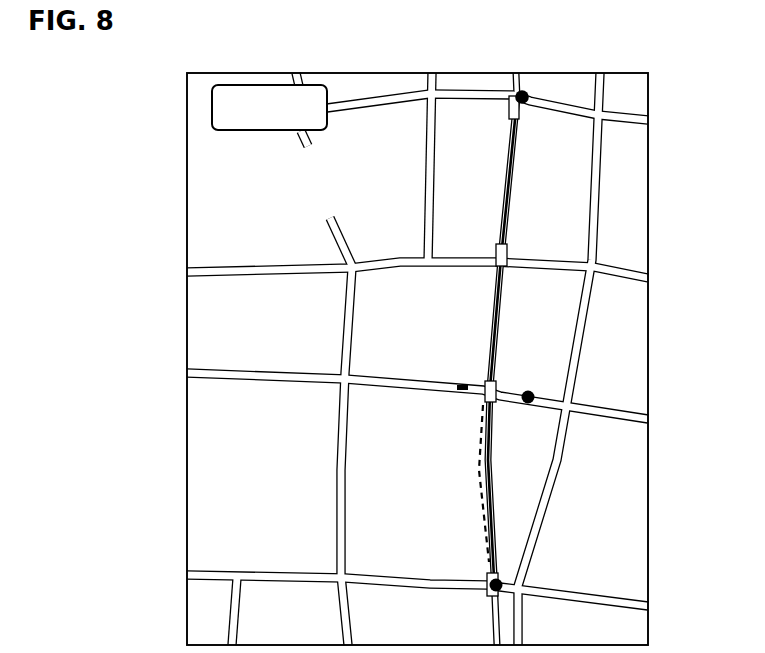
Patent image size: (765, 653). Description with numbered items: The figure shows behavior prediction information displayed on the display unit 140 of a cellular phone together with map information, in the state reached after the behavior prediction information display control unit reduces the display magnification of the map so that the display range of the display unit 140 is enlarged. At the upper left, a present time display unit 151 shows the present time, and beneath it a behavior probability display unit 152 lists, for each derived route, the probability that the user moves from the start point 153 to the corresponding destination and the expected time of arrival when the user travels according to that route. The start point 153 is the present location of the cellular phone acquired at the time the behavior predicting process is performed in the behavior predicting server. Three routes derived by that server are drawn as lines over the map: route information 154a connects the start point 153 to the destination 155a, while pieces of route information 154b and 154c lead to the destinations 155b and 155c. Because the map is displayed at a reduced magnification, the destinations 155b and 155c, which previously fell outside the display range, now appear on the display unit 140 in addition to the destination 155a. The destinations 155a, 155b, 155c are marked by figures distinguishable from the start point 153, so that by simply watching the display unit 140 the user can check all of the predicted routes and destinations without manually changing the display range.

The display unit 140 is at (471, 73).
The present time display unit 151 is at (213, 104).
The behavior probability display unit 152 is at (210, 157).
The start point 153 is at (458, 388).
The route information 154a is at (500, 402).
The route information 154b is at (509, 248).
The route information 154c is at (480, 459).
The destination 155a is at (533, 392).
The destination 155b is at (530, 98).
The destination 155c is at (500, 590).